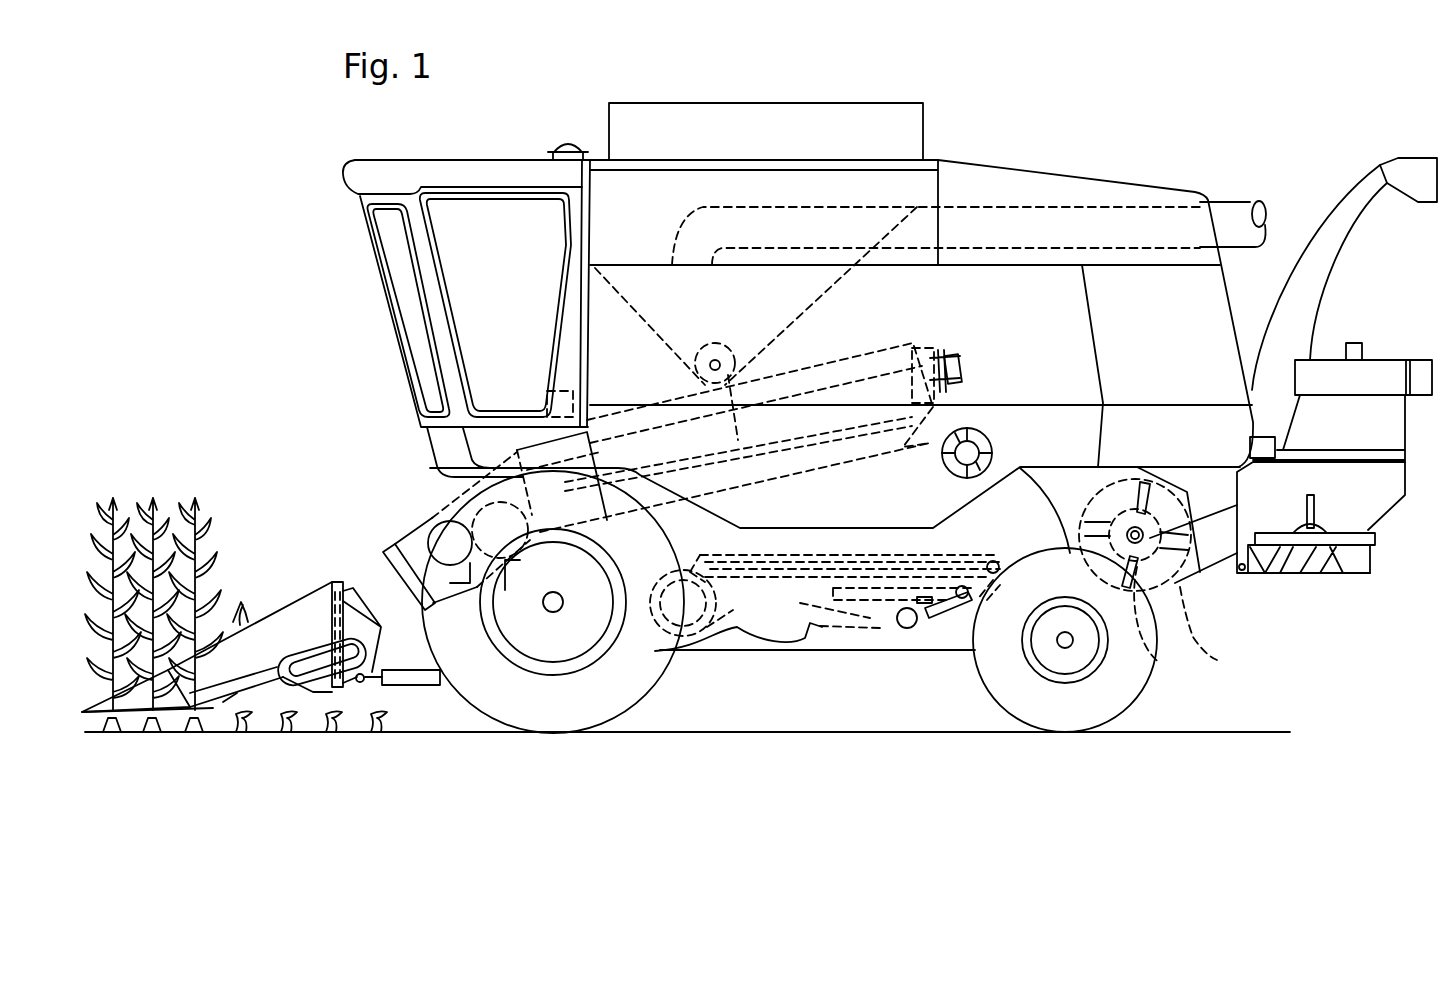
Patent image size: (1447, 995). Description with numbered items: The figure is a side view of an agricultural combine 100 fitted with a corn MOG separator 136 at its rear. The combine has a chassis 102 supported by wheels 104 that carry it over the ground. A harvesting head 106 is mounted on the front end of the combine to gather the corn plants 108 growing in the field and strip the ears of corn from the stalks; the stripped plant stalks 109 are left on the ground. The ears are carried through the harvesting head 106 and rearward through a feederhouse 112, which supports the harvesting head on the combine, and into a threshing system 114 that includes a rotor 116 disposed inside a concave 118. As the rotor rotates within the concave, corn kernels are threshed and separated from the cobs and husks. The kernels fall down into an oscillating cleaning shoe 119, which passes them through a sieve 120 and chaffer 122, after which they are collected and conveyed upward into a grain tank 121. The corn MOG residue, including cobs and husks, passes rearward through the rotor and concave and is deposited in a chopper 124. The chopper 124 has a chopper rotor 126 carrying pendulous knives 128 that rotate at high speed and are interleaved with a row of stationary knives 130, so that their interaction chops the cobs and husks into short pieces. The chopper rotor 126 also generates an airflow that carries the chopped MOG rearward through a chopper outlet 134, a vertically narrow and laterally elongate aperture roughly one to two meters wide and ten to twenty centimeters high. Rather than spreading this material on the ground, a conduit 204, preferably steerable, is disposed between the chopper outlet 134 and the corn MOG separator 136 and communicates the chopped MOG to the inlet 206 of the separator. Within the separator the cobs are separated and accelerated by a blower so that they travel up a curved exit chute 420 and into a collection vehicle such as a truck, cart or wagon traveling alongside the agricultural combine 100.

The agricultural combine 100 is at (305, 194).
The chassis 102 is at (855, 645).
The wheels 104 is at (597, 713).
The harvesting head 106 is at (233, 622).
The corn plants 108 is at (150, 484).
The plant stalks 109 is at (395, 715).
The feederhouse 112 is at (368, 570).
The threshing system 114 is at (746, 338).
The rotor 116 is at (848, 330).
The concave 118 is at (920, 310).
The oscillating cleaning shoe 119 is at (849, 541).
The sieve 120 is at (822, 557).
The grain tank 121 is at (657, 305).
The chaffer 122 is at (880, 560).
The chopper 124 is at (1201, 628).
The chopper rotor 126 is at (1093, 485).
The pendulous knives 128 is at (1093, 503).
The stationary knives 130 is at (1140, 637).
The chopper outlet 134 is at (1198, 572).
The corn MOG separator 136 is at (1393, 526).
The conduit 204 is at (1210, 515).
The inlet 206 is at (1263, 507).
The curved exit chute 420 is at (1337, 203).